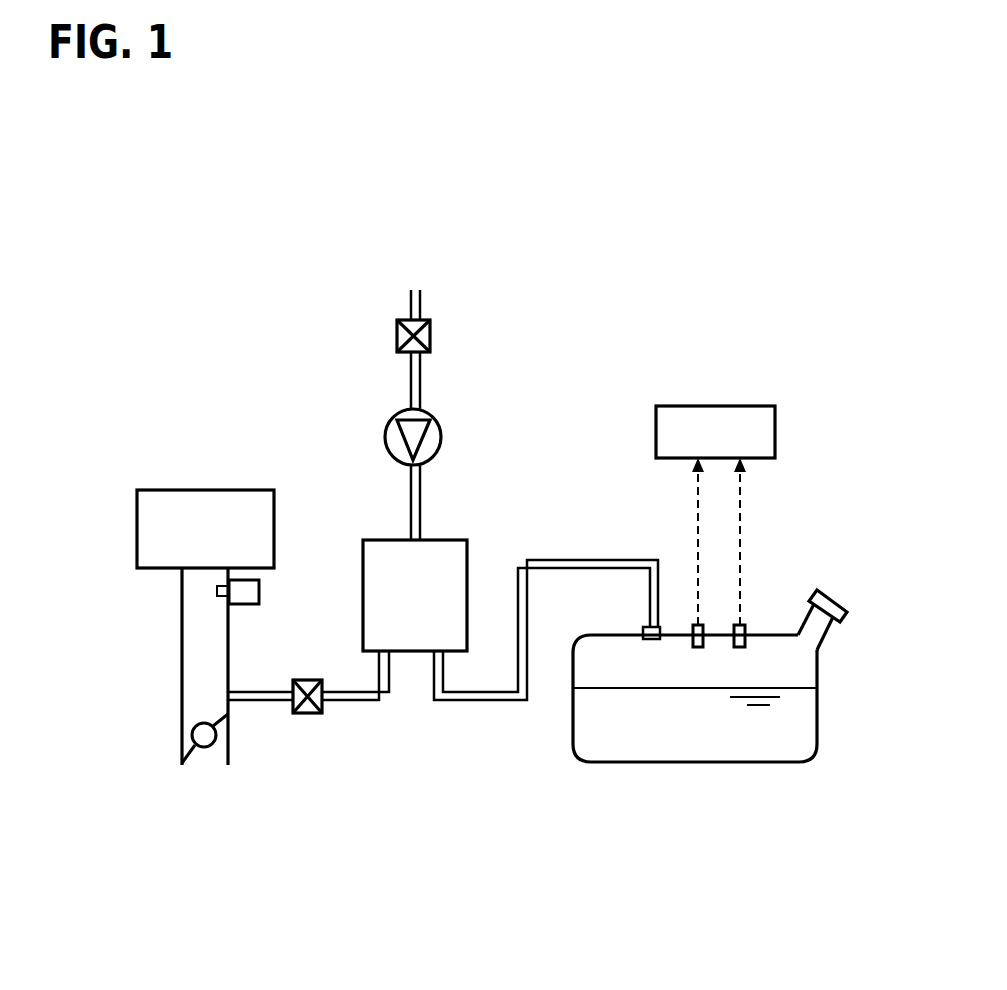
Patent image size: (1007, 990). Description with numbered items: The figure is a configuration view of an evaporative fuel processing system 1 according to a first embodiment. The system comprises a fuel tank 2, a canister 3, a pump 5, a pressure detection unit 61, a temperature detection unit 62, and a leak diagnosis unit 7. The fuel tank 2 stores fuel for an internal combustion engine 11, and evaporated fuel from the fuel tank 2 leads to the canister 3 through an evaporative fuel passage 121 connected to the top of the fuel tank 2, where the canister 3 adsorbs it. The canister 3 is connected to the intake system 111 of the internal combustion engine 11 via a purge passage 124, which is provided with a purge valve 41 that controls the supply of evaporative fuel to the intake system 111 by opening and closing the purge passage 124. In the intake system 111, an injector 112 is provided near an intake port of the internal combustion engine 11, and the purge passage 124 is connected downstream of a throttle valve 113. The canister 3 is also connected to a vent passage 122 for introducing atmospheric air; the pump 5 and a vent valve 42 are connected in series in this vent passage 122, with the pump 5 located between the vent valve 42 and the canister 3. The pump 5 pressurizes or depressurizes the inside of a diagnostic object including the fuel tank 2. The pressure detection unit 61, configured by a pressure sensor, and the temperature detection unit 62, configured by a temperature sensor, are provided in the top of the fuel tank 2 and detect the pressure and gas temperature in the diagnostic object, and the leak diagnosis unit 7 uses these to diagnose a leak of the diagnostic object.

The evaporative fuel processing system 1 is at (315, 810).
The fuel tank 2 is at (692, 740).
The canister 3 is at (378, 548).
The pump 5 is at (430, 433).
The leak diagnosis unit 7 is at (712, 427).
The internal combustion engine 11 is at (170, 521).
The purge valve 41 is at (303, 713).
The vent valve 42 is at (397, 340).
The pressure detection unit 61 is at (703, 627).
The temperature detection unit 62 is at (745, 627).
The intake system 111 is at (190, 623).
The injector 112 is at (247, 592).
The throttle valve 113 is at (196, 748).
The evaporative fuel passage 121 is at (505, 695).
The vent passage 122 is at (409, 386).
The purge passage 124 is at (362, 695).